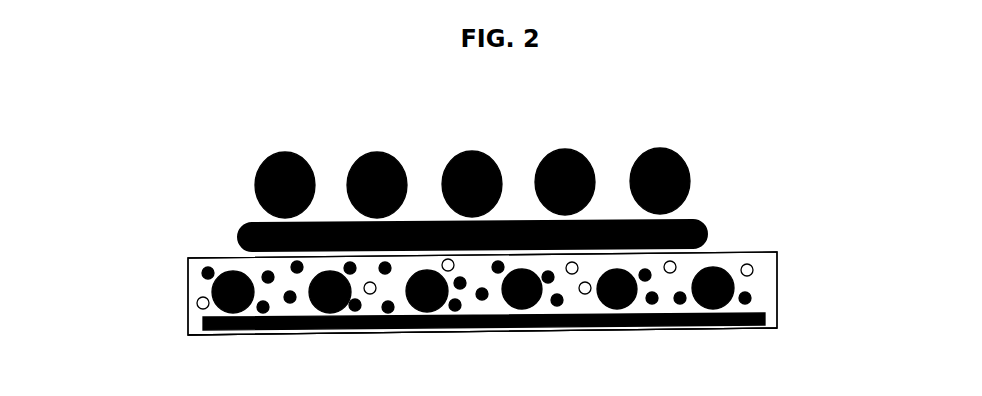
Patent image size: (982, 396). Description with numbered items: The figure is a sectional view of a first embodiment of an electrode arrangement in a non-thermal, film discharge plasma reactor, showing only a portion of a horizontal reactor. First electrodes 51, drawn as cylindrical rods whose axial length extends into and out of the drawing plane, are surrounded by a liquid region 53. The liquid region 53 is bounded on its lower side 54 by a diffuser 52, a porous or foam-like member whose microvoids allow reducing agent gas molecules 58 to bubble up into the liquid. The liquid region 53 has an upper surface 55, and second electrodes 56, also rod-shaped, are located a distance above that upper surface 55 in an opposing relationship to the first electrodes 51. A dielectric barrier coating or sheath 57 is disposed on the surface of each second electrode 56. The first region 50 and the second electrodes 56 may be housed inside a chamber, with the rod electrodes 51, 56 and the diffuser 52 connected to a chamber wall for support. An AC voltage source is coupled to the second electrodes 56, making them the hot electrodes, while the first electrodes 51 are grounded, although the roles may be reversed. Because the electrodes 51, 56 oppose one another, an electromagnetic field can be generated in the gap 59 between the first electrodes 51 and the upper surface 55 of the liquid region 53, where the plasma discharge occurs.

The first region 50 is at (158, 302).
The first electrodes 51 is at (733, 275).
The diffuser 52 is at (487, 320).
The liquid region 53 is at (767, 270).
The lower side 54 is at (432, 334).
The upper surface 55 is at (206, 266).
The second electrodes 56 is at (681, 155).
The dielectric barrier coating or sheath 57 is at (455, 158).
The reducing agent gas molecules 58 is at (751, 300).
The gap 59 is at (712, 228).